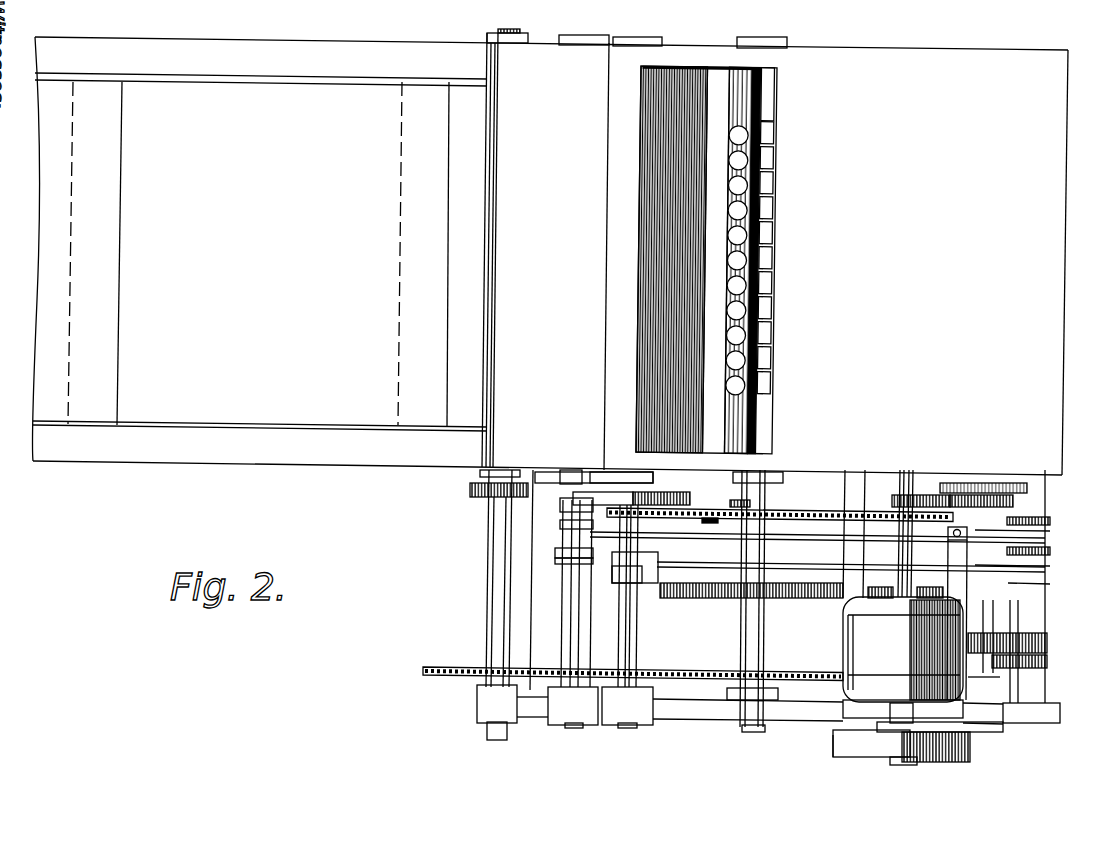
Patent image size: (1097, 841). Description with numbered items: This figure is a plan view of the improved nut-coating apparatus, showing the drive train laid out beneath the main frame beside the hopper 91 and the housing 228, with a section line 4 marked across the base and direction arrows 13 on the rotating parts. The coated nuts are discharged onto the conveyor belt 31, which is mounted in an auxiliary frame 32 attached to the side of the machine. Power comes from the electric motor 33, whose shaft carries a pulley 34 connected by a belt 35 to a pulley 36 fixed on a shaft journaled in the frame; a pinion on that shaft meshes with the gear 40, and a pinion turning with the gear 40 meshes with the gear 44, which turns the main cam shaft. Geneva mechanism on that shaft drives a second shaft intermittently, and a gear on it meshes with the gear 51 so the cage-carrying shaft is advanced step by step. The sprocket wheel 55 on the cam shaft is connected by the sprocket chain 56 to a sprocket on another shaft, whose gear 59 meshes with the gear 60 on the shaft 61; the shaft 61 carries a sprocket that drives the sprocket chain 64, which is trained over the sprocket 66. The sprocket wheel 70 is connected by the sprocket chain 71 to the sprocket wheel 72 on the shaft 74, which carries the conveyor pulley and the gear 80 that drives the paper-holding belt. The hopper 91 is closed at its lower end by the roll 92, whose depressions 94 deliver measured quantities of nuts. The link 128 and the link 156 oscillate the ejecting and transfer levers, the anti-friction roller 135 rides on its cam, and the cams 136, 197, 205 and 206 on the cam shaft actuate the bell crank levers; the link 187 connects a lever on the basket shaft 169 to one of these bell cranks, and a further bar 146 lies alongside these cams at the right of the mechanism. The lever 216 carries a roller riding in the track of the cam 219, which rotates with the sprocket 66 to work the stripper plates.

The section line 4- 4 is at (415, 666).
The direction arrows 13 is at (467, 486).
The conveyor belt 31 is at (324, 410).
The auxiliary frame 32 is at (351, 464).
The electric motor 33 is at (865, 640).
The pulley 34 is at (880, 757).
The belt 35 is at (833, 742).
The pulley 36 is at (845, 755).
The gear 40 is at (1040, 662).
The gear 44 is at (1040, 645).
The gear 51 is at (735, 598).
The sprocket wheel 55 is at (1046, 493).
The sprocket chain 56 is at (995, 484).
The gear 59 is at (982, 494).
The gear 60 is at (910, 494).
The shaft 61 is at (903, 492).
The sprocket chain 64 is at (816, 510).
The sprocket 66 is at (657, 518).
The sprocket wheel 70 is at (977, 680).
The sprocket chain 71 is at (690, 672).
The sprocket wheel 72 is at (462, 677).
The shaft 74 is at (496, 640).
The gear 80 is at (478, 497).
The hopper 91 is at (723, 239).
The roll 92 is at (737, 92).
The depressions 94 is at (749, 231).
The link 128 is at (795, 500).
The anti-friction roller 135 is at (557, 546).
The cam 136 is at (1044, 587).
The bar 146 is at (1043, 553).
The link 156 is at (583, 506).
The shaft 169 is at (575, 630).
The link 187 is at (727, 524).
The cam 197 is at (1027, 568).
The cam 205 is at (1043, 522).
The cam 206 is at (1040, 535).
The lever 216 is at (570, 491).
The cam 219 is at (596, 484).
The housing 228 is at (813, 251).